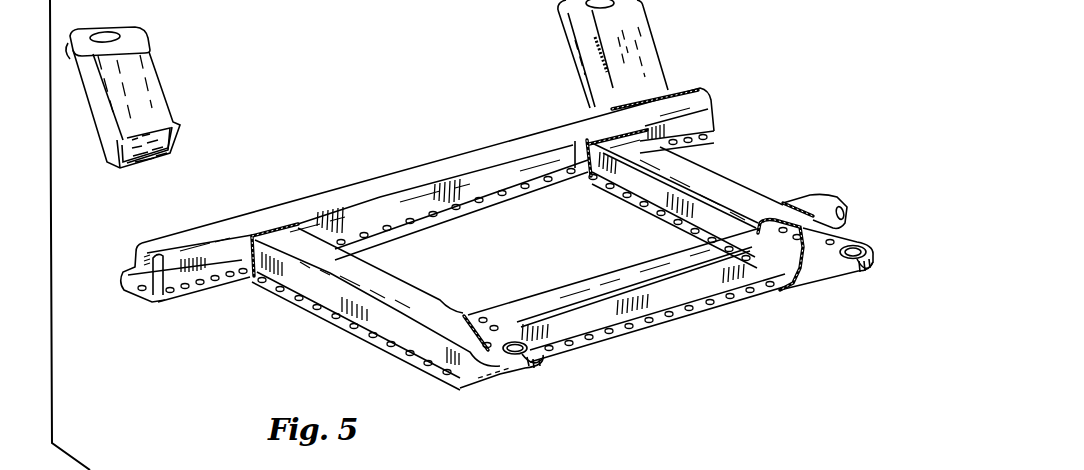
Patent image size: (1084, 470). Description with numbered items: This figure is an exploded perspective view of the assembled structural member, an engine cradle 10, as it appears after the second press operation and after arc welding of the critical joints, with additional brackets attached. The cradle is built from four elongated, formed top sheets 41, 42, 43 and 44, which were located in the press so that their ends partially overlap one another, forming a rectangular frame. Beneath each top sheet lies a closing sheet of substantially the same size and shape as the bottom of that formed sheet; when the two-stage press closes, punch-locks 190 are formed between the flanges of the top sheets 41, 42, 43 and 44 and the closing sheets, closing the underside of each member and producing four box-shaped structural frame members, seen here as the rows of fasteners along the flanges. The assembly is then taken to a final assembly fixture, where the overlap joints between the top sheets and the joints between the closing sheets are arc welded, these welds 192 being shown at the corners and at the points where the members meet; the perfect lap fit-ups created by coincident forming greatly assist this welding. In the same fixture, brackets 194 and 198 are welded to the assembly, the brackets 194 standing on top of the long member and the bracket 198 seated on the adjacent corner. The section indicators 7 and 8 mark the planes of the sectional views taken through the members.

The engine cradle 10 is at (756, 156).
The top sheet 41 is at (610, 274).
The top sheet 42 is at (430, 142).
The top sheet 43 is at (393, 270).
The top sheet 44 is at (772, 196).
The punch-locks 190 is at (538, 196).
The arc welds 192 is at (532, 220).
The bracket 194 is at (367, 84).
The bracket 198 is at (827, 200).
The section line 7- 7 is at (481, 272).
The section line 8- 8 is at (263, 152).